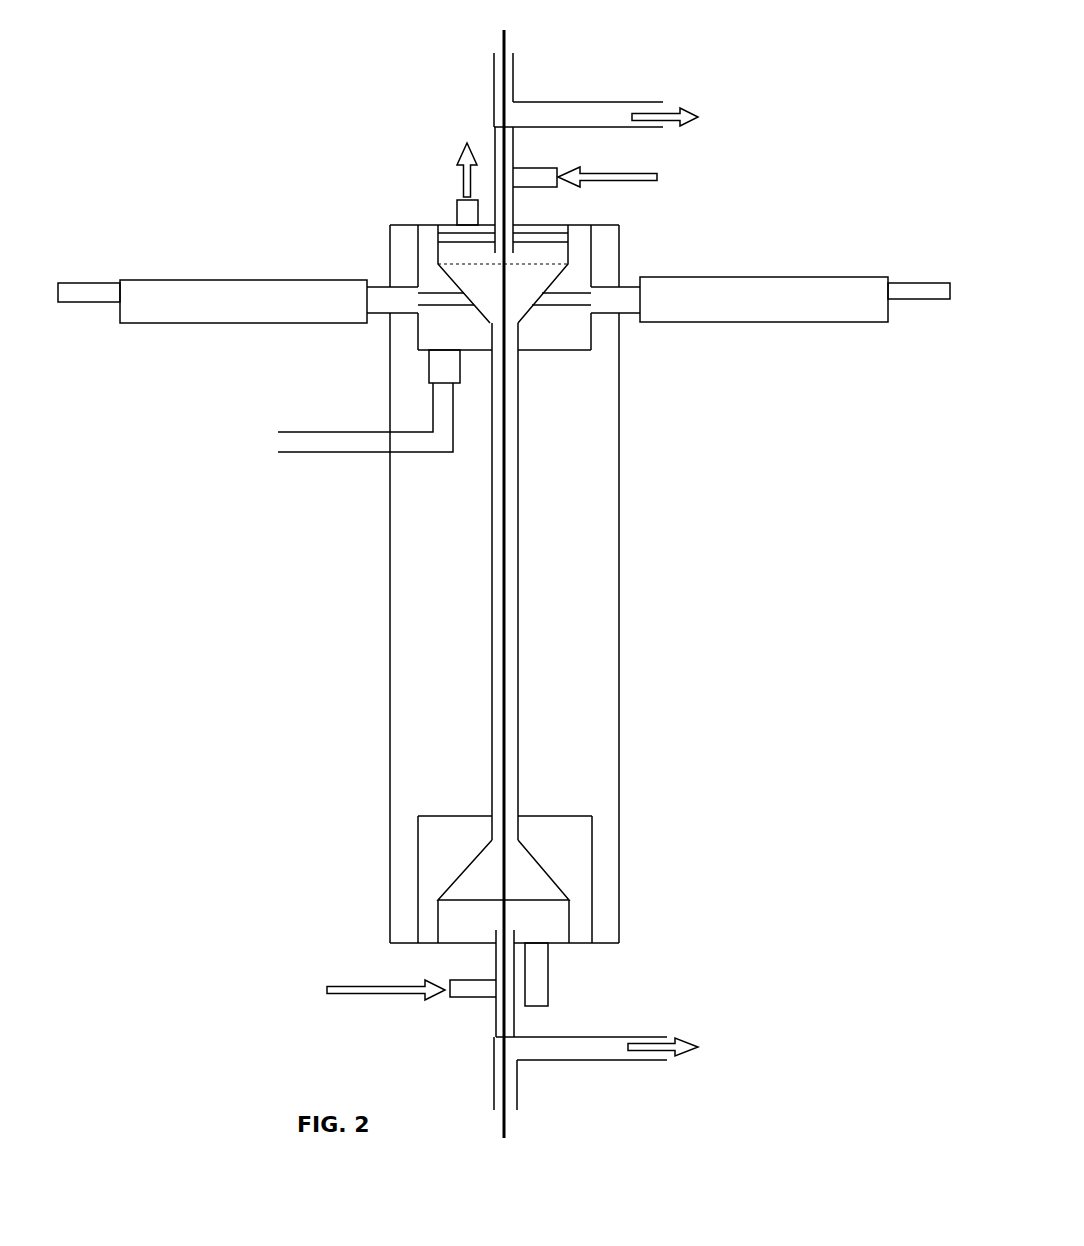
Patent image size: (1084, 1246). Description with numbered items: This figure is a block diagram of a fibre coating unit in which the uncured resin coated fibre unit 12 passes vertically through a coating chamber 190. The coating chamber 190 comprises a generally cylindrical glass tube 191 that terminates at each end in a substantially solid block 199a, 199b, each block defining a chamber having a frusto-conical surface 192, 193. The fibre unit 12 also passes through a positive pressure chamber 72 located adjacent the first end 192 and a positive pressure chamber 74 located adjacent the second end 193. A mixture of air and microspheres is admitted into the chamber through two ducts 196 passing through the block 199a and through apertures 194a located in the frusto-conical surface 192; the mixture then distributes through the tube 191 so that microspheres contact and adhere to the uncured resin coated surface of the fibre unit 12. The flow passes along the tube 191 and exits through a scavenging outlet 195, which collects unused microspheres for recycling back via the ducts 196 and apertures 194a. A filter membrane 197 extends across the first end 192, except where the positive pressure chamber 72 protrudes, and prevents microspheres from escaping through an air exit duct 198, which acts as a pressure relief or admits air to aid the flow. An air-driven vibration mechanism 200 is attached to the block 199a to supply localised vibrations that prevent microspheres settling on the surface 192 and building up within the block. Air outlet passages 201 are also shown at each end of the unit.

The coating chamber 190 is at (194, 172).
The fibre unit 12 is at (512, 37).
The air outlet tube 201 is at (599, 99).
The positive pressure chamber 72 is at (500, 151).
The air exit duct 198 is at (456, 206).
The frusto-conical surface 192 is at (528, 300).
The apertures 194a is at (550, 282).
The filter membrane 197 is at (534, 238).
The block 199a is at (566, 354).
The ducts 196 is at (213, 325).
The vibration mechanism 200 is at (428, 368).
The glass tube 191 is at (520, 476).
The block 199b is at (596, 824).
The frusto-conical surface 193 is at (469, 877).
The positive pressure chamber 74 is at (469, 979).
The scavenging outlet 195 is at (542, 971).